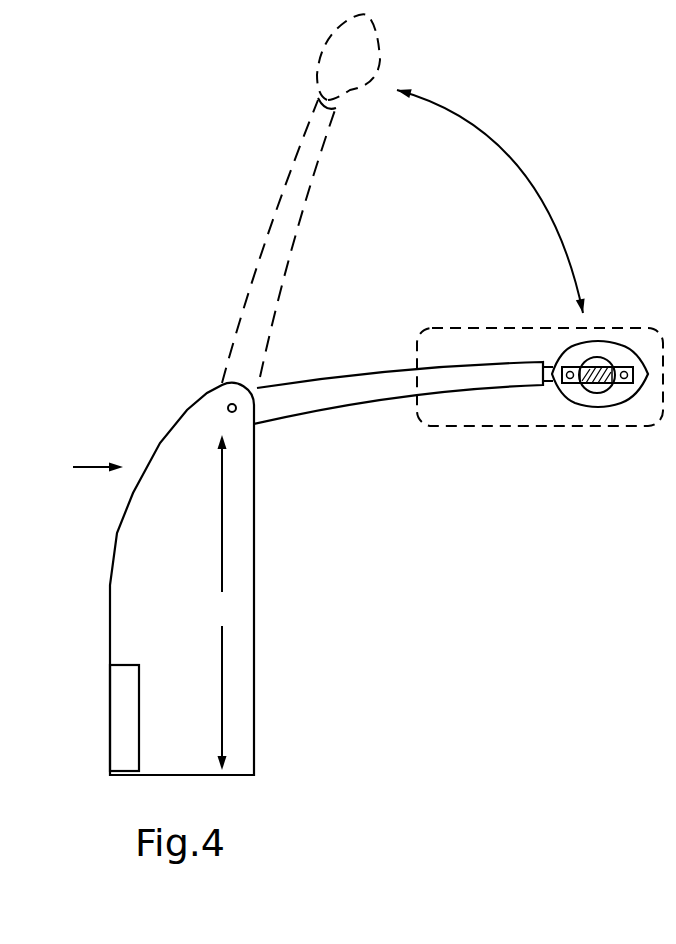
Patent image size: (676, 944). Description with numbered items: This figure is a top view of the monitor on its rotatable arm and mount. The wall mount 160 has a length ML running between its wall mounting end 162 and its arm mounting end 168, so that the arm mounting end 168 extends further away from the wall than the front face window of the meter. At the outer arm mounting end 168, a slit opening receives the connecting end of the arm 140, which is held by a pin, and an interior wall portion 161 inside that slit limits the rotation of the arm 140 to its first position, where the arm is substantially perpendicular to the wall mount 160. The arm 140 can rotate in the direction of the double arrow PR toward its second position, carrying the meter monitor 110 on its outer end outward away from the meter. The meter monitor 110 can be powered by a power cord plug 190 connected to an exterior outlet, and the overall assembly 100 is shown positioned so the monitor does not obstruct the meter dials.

The dental curing light device 100 is at (130, 272).
The meter monitor 110 is at (628, 441).
The arm 140 is at (410, 433).
The wall mount 160 is at (90, 597).
The interior wall portion 161 is at (236, 415).
The wall mounting end 162 is at (157, 775).
The arm mounting end 168 is at (262, 388).
The power cord plug 190 is at (533, 340).